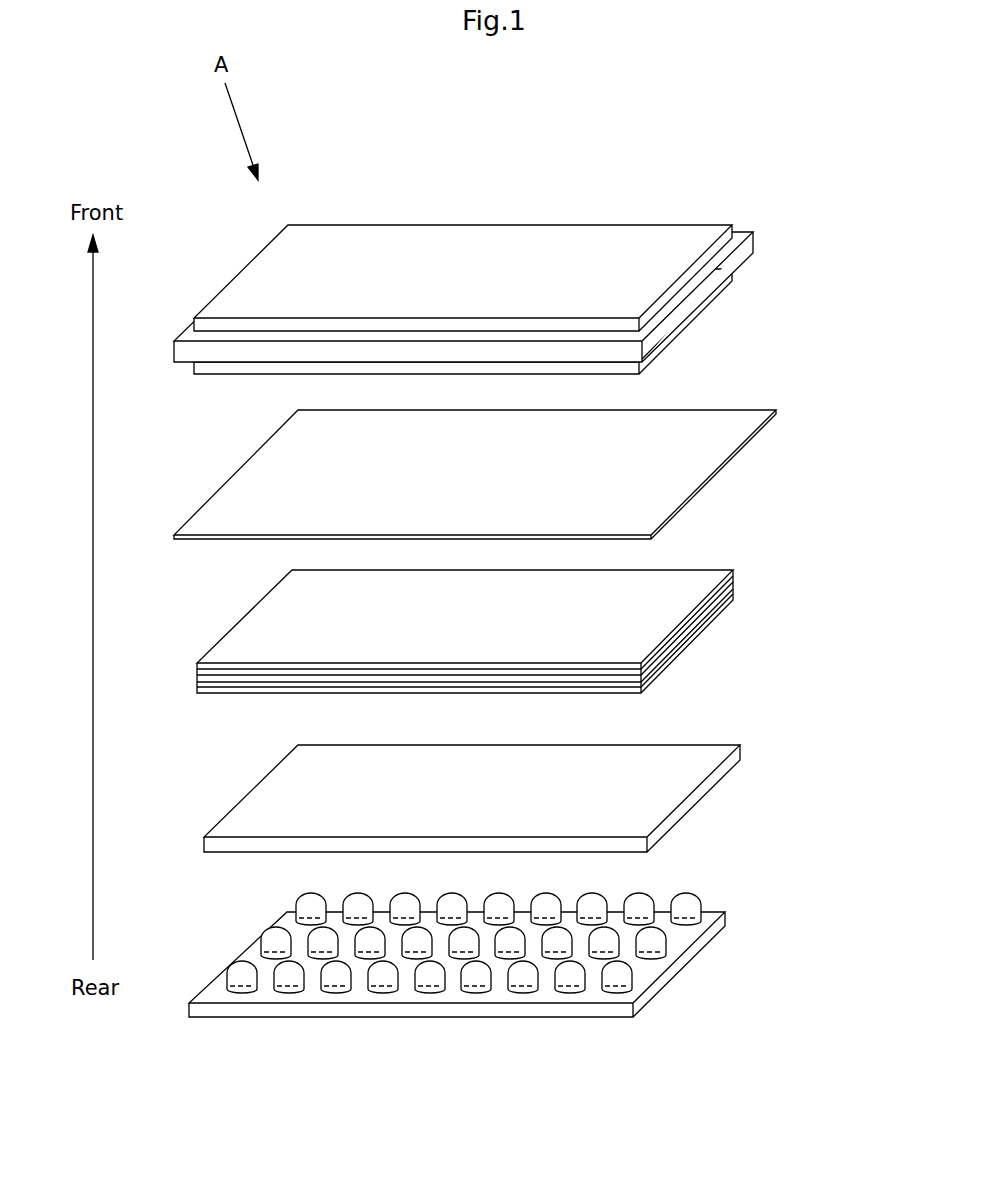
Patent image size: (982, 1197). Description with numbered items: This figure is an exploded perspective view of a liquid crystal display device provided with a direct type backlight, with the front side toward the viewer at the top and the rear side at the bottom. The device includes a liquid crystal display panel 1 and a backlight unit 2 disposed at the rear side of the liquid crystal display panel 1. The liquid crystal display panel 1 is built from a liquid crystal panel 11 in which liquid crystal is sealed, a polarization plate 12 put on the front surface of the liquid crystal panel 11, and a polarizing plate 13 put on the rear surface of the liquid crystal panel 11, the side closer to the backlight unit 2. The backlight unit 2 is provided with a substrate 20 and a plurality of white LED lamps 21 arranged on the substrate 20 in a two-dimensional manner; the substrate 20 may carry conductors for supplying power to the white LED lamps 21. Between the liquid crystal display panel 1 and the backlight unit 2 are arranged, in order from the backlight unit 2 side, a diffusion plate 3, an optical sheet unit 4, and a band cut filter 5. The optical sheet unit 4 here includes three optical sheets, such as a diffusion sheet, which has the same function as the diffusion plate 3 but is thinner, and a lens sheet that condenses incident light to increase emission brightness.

The liquid crystal display panel 1 is at (529, 275).
The liquid crystal panel 11 is at (746, 247).
The polarization plate 12 is at (718, 233).
The polarizing plate 13 is at (709, 299).
The band cut filter 5 is at (733, 438).
The optical sheet unit 4 is at (742, 558).
The diffusion plate 3 is at (697, 782).
The backlight unit 2 is at (510, 950).
The substrate 20 is at (680, 945).
The white LED lamps 21 is at (318, 895).